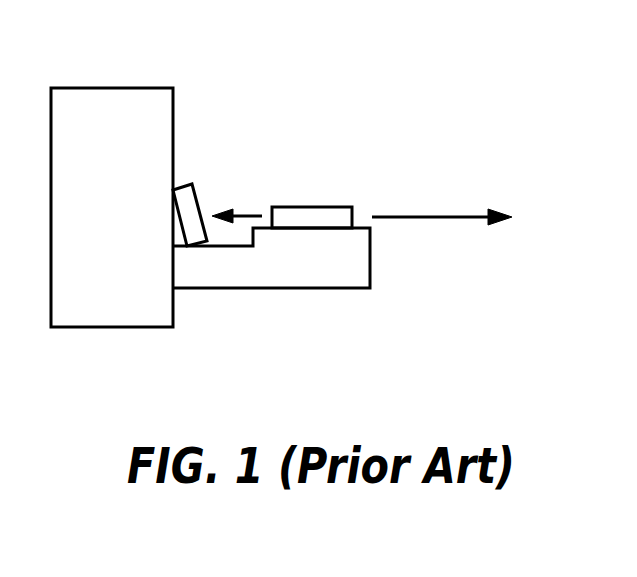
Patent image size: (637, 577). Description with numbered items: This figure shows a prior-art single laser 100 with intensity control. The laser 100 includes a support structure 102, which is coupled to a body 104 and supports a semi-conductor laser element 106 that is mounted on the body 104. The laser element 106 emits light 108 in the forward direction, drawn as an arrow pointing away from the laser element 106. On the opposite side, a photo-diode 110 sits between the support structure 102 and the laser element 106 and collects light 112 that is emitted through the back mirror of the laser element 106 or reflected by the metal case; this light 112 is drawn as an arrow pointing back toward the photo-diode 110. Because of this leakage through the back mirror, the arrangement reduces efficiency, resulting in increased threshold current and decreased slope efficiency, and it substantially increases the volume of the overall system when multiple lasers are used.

The laser 100 is at (304, 380).
The support structure 102 is at (173, 109).
The body 104 is at (370, 268).
The semi-conductor laser element 106 is at (340, 207).
The light 108 is at (448, 217).
The photo-diode 110 is at (185, 178).
The light 112 is at (243, 216).